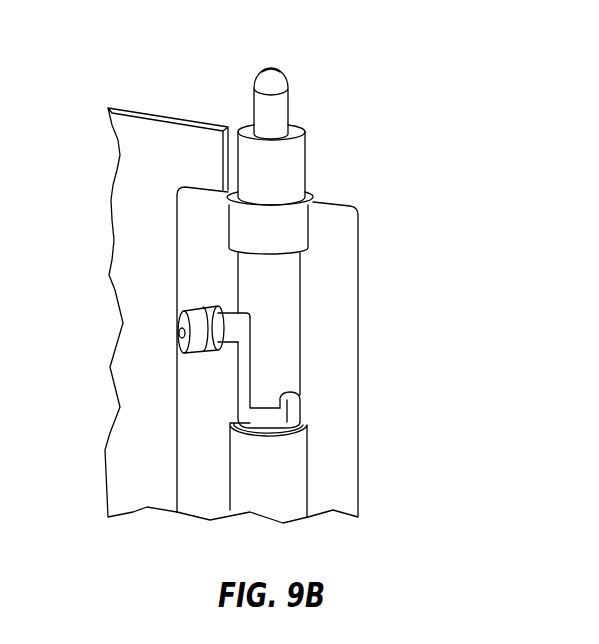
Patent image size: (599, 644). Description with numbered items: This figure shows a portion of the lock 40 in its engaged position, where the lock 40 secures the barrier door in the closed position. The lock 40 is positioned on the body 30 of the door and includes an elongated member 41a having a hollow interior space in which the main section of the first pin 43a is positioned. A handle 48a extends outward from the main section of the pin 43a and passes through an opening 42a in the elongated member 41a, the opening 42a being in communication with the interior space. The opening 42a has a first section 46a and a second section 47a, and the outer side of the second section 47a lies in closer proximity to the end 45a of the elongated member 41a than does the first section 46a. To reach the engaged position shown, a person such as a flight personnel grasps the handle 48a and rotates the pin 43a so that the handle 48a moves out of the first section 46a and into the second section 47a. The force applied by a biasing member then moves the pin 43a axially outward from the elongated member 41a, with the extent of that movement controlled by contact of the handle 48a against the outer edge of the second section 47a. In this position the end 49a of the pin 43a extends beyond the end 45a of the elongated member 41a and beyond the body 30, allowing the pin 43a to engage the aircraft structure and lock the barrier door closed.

The body 30 is at (133, 292).
The lock 40 is at (472, 215).
The elongated member 41a is at (293, 172).
The opening 42a is at (243, 373).
The first pin 43a is at (281, 92).
The end of the elongated member 45a is at (302, 130).
The first section 46a is at (298, 408).
The second section 47a is at (240, 308).
The handle 48a is at (181, 332).
The end of the pin 49a is at (270, 69).